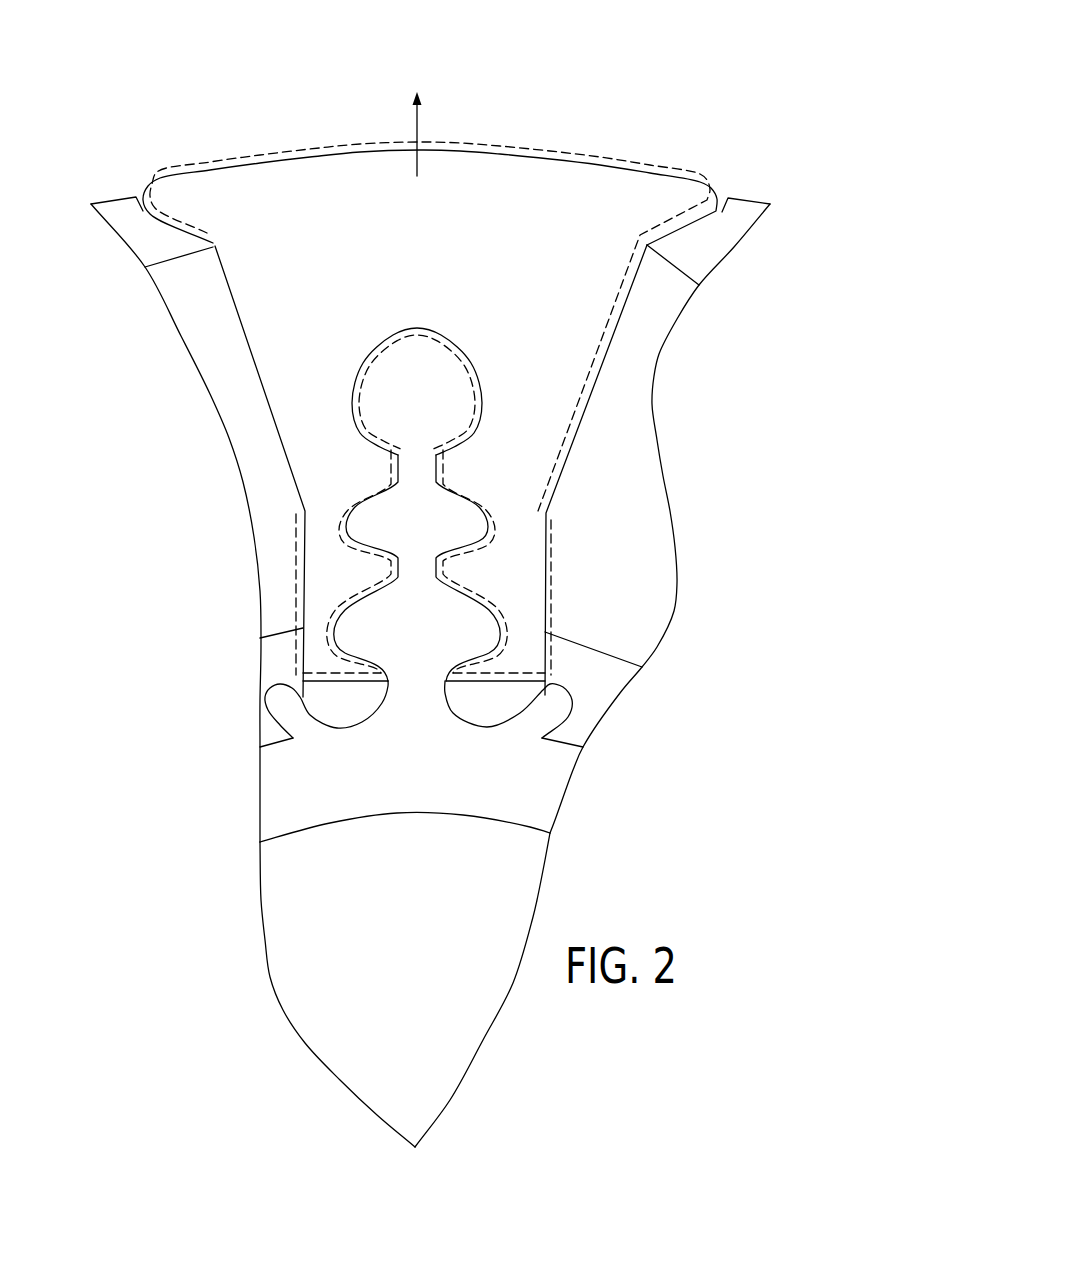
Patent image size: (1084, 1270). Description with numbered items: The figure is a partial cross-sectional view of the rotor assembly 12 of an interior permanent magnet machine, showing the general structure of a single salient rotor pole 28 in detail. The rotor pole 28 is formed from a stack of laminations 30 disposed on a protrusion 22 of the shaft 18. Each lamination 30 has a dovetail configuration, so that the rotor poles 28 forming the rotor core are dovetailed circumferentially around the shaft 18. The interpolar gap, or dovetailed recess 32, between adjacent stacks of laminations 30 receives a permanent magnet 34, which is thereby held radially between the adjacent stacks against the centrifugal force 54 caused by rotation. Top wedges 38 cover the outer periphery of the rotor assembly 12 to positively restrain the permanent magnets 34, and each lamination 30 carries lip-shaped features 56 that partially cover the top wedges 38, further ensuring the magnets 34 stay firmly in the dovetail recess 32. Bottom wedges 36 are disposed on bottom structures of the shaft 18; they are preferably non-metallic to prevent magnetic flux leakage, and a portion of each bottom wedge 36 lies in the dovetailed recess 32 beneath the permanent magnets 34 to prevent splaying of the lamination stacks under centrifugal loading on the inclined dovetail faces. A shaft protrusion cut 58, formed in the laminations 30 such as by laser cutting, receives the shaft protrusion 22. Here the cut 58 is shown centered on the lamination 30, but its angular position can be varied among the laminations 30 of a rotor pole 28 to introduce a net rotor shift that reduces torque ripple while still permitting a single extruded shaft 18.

The rotor assembly 12 is at (682, 52).
The shaft 18 is at (545, 790).
The shaft protrusion 22 is at (455, 522).
The rotor pole 28 is at (212, 120).
The lamination 30 is at (537, 418).
The dovetailed recess 32 is at (226, 620).
The permanent magnet 34 is at (245, 428).
The bottom wedge 36 is at (279, 667).
The top wedge 38 is at (722, 243).
The centrifugal force 54 is at (420, 125).
The lip-shaped feature 56 is at (163, 195).
The shaft protrusion cut 58 is at (350, 346).